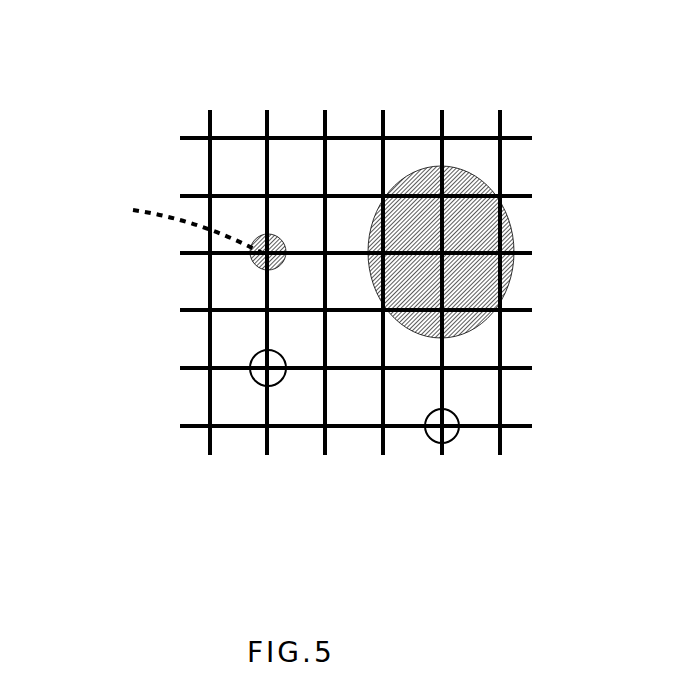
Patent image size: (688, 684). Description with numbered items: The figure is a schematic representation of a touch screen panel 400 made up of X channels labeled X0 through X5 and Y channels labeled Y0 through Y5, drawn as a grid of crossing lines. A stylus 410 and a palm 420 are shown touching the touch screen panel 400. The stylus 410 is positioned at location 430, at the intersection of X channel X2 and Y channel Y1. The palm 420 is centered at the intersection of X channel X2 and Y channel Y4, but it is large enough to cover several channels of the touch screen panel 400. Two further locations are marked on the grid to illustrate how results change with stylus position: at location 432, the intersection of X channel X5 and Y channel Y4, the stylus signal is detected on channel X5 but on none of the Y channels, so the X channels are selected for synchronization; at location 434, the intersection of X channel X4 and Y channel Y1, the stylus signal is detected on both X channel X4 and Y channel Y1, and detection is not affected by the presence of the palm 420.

The touch screen panel 400 is at (335, 70).
The stylus 410 is at (147, 214).
The palm 420 is at (508, 233).
The location 430 is at (260, 258).
The location 432 is at (427, 435).
The location 434 is at (258, 382).